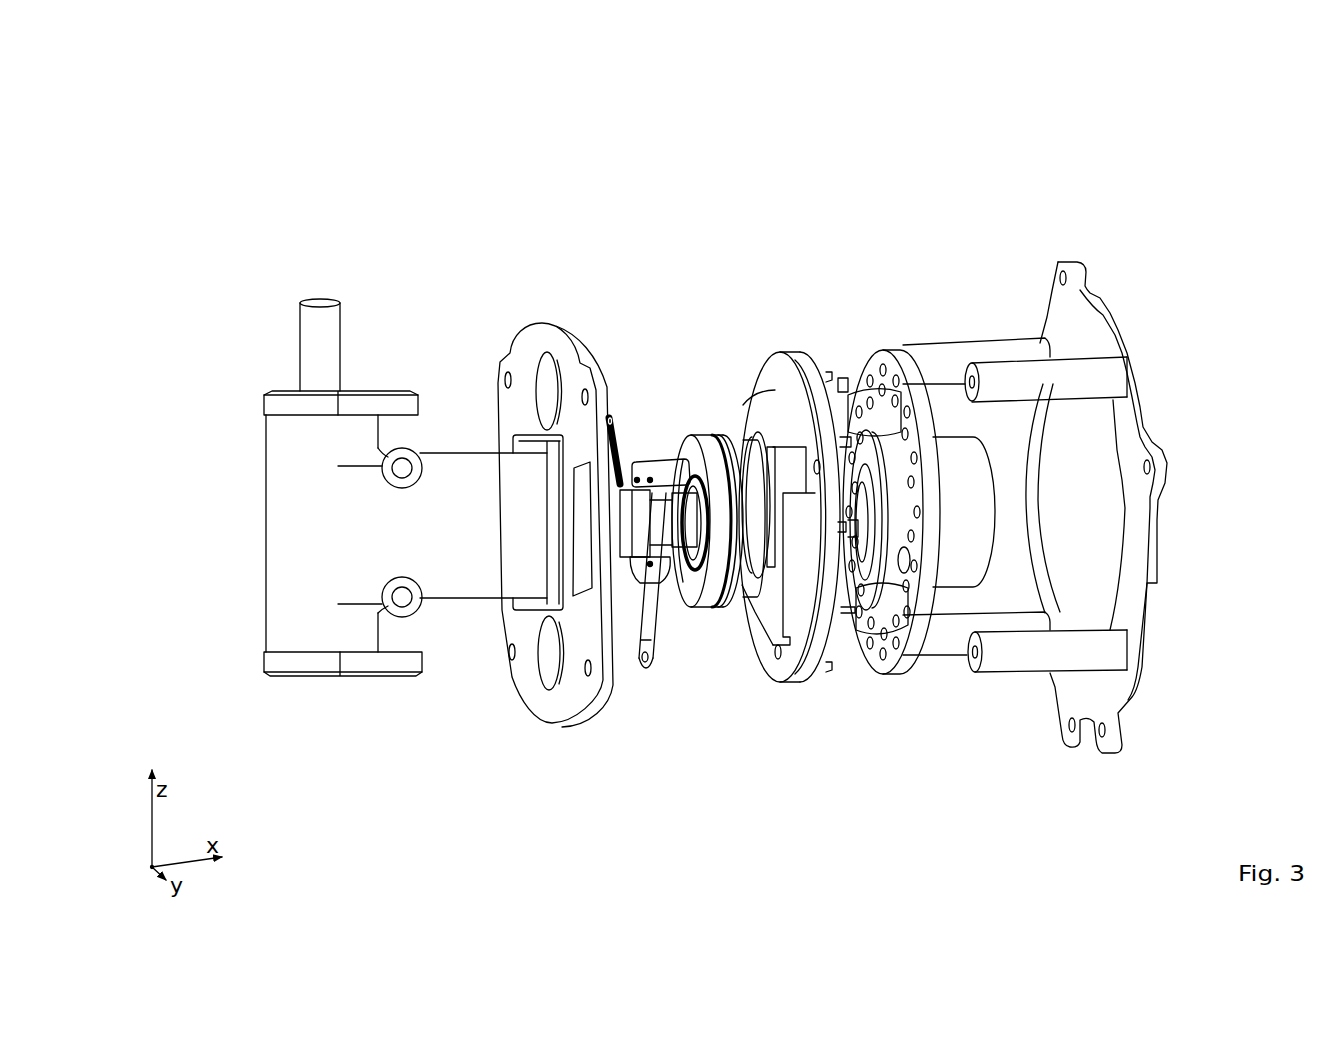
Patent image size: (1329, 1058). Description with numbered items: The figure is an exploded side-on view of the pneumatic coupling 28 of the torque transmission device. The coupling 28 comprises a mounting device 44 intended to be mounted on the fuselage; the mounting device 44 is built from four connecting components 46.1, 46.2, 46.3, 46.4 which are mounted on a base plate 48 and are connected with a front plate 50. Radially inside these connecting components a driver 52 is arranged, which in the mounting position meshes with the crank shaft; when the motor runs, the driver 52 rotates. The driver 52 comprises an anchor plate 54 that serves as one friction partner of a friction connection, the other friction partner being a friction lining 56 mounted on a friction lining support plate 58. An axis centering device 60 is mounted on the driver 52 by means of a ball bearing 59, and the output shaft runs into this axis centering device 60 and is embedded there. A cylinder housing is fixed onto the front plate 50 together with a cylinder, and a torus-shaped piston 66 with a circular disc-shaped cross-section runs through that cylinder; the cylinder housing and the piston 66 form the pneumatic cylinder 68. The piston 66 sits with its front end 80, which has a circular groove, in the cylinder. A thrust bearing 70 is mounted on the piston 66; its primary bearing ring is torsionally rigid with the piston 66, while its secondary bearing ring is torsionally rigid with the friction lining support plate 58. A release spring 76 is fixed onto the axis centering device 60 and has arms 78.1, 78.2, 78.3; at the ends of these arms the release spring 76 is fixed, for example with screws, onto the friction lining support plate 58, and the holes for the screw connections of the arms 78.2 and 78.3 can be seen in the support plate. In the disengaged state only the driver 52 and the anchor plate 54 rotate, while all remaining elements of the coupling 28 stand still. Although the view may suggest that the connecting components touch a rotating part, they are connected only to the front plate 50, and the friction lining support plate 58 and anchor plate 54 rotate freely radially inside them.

The pneumatic coupling 28 is at (1245, 193).
The mounting device 44 is at (1172, 325).
The connecting component 46.1 is at (950, 358).
The connecting component 46.2 is at (940, 652).
The connecting component 46.3 is at (1012, 657).
The connecting component 46.4 is at (1113, 373).
The base plate 48 is at (1160, 508).
The front plate 50 is at (551, 707).
The driver 52 is at (962, 560).
The anchor plate 54 is at (873, 350).
The friction lining 56 is at (815, 360).
The friction lining support plate 58 is at (777, 682).
The ball bearing 59 is at (838, 380).
The axis centering device 60 is at (849, 640).
The piston 66 is at (703, 430).
The pneumatic cylinder 68 is at (699, 718).
The thrust bearing 70 is at (727, 443).
The release spring 76 is at (637, 650).
The arm 78.1 is at (618, 450).
The arm 78.2 is at (653, 647).
The arm 78.3 is at (659, 467).
The front end 80 is at (690, 450).